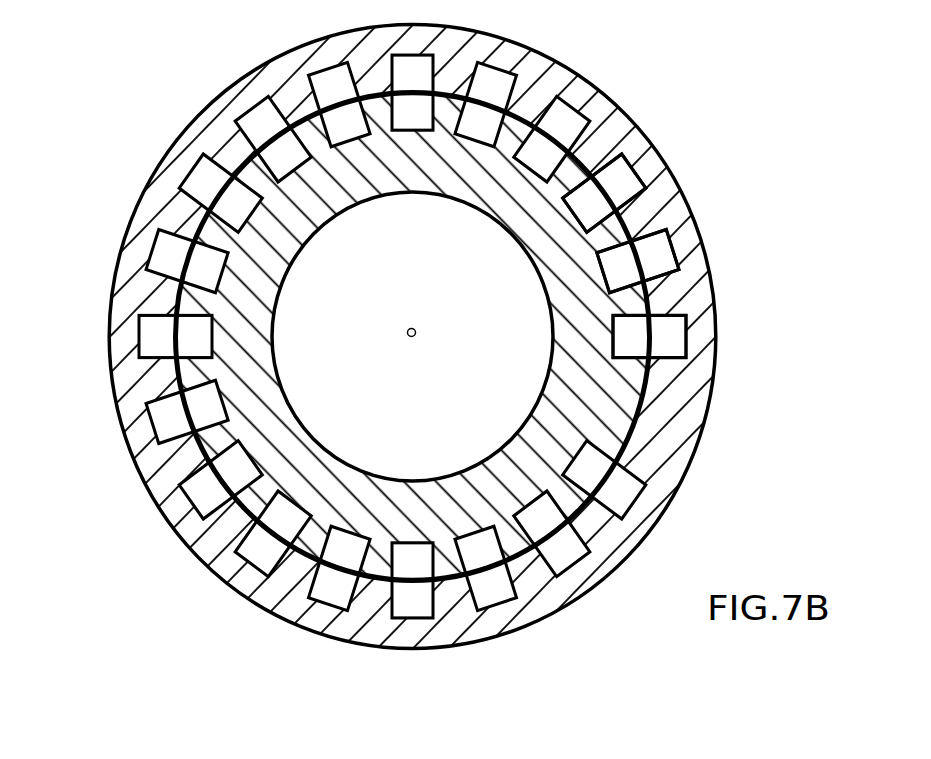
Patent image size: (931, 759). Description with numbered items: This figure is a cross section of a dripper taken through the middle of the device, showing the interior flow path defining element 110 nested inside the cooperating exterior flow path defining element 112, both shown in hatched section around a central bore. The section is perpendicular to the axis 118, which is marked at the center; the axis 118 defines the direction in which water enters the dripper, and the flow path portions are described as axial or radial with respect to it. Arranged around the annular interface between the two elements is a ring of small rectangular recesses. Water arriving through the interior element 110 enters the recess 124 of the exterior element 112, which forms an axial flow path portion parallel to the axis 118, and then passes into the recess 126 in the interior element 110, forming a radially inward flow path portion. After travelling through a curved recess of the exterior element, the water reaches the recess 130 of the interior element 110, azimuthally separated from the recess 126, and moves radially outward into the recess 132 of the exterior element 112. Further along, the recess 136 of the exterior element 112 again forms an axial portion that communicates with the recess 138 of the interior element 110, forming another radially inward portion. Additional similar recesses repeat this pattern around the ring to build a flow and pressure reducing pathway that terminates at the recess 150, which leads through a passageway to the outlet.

The interior flow path defining element 110 is at (233, 364).
The exterior flow path defining element 112 is at (162, 460).
The axis 118 is at (407, 330).
The recess 124 is at (673, 343).
The recess 126 is at (635, 323).
The recess 130 is at (615, 256).
The recess 132 is at (656, 251).
The recess 136 is at (623, 177).
The recess 138 is at (587, 200).
The recess 150 is at (587, 457).